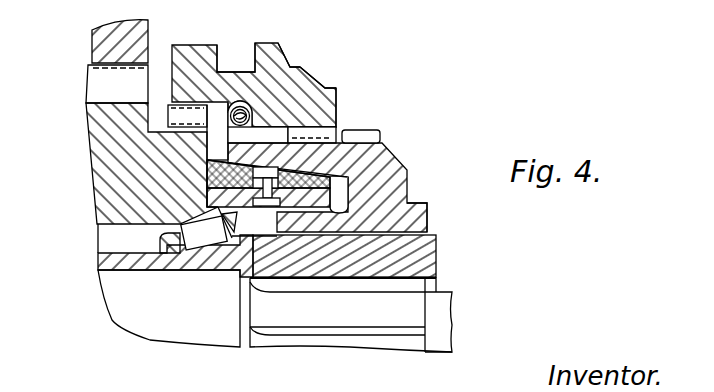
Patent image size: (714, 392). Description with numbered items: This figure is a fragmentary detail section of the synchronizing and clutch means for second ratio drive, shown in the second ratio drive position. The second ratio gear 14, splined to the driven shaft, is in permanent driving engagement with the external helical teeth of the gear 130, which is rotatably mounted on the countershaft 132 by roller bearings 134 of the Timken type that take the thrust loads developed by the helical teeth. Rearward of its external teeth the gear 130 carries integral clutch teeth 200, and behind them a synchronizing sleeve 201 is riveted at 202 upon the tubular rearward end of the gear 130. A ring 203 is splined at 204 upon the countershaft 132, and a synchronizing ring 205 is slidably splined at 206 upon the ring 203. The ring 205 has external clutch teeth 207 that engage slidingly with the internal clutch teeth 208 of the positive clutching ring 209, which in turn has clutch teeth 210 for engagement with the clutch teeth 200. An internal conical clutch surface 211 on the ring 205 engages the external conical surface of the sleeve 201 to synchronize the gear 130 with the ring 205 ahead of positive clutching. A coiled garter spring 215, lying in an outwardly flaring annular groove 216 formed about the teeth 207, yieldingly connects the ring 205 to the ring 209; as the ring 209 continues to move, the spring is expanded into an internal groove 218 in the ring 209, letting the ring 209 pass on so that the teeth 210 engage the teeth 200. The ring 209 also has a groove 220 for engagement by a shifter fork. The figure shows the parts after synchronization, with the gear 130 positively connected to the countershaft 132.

The second ratio gear 14 is at (100, 45).
The gear 130 is at (207, 160).
The countershaft 132 is at (115, 300).
The roller bearings 134 is at (203, 240).
The clutch teeth 200 is at (183, 120).
The synchronizing sleeve 201 is at (100, 190).
The rivet 202 is at (268, 200).
The ring 203 is at (420, 257).
The spline 204 is at (413, 284).
The synchronizing ring 205 is at (385, 188).
The spline 206 is at (403, 224).
The external clutch teeth 207 is at (337, 125).
The internal clutch teeth 208 is at (300, 122).
The positive clutching ring 209 is at (298, 100).
The clutch teeth 210 is at (213, 111).
The internal conical clutch surface 211 is at (313, 168).
The coiled garter spring 215 is at (282, 73).
The annular groove 216 is at (276, 129).
The internal groove 218 is at (236, 101).
The groove 220 is at (222, 50).